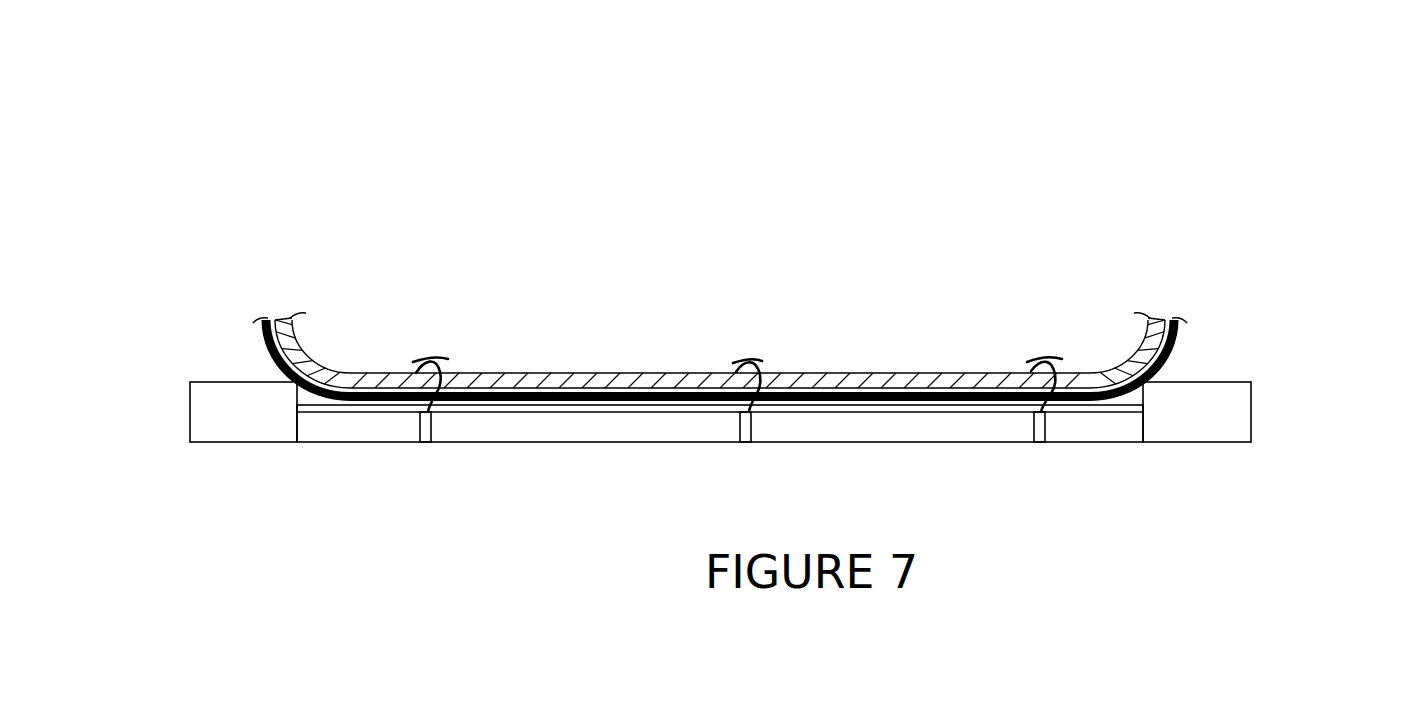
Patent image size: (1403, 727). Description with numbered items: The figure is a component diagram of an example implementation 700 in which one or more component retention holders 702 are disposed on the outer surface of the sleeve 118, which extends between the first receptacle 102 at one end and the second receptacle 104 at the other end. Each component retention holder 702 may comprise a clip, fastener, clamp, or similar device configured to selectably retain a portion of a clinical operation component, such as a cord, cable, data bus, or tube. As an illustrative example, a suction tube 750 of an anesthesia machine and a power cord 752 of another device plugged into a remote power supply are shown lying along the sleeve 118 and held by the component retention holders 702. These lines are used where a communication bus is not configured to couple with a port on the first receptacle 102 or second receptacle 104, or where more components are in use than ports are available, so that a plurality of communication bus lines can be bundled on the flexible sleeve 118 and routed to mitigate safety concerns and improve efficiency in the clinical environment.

The example implementation 700 is at (1085, 140).
The suction tube 750 is at (597, 373).
The power cord 752 is at (1170, 343).
The component retention holder 702 is at (432, 350).
The first receptacle 102 is at (190, 392).
The second receptacle 104 is at (1251, 415).
The sleeve 118 is at (898, 442).